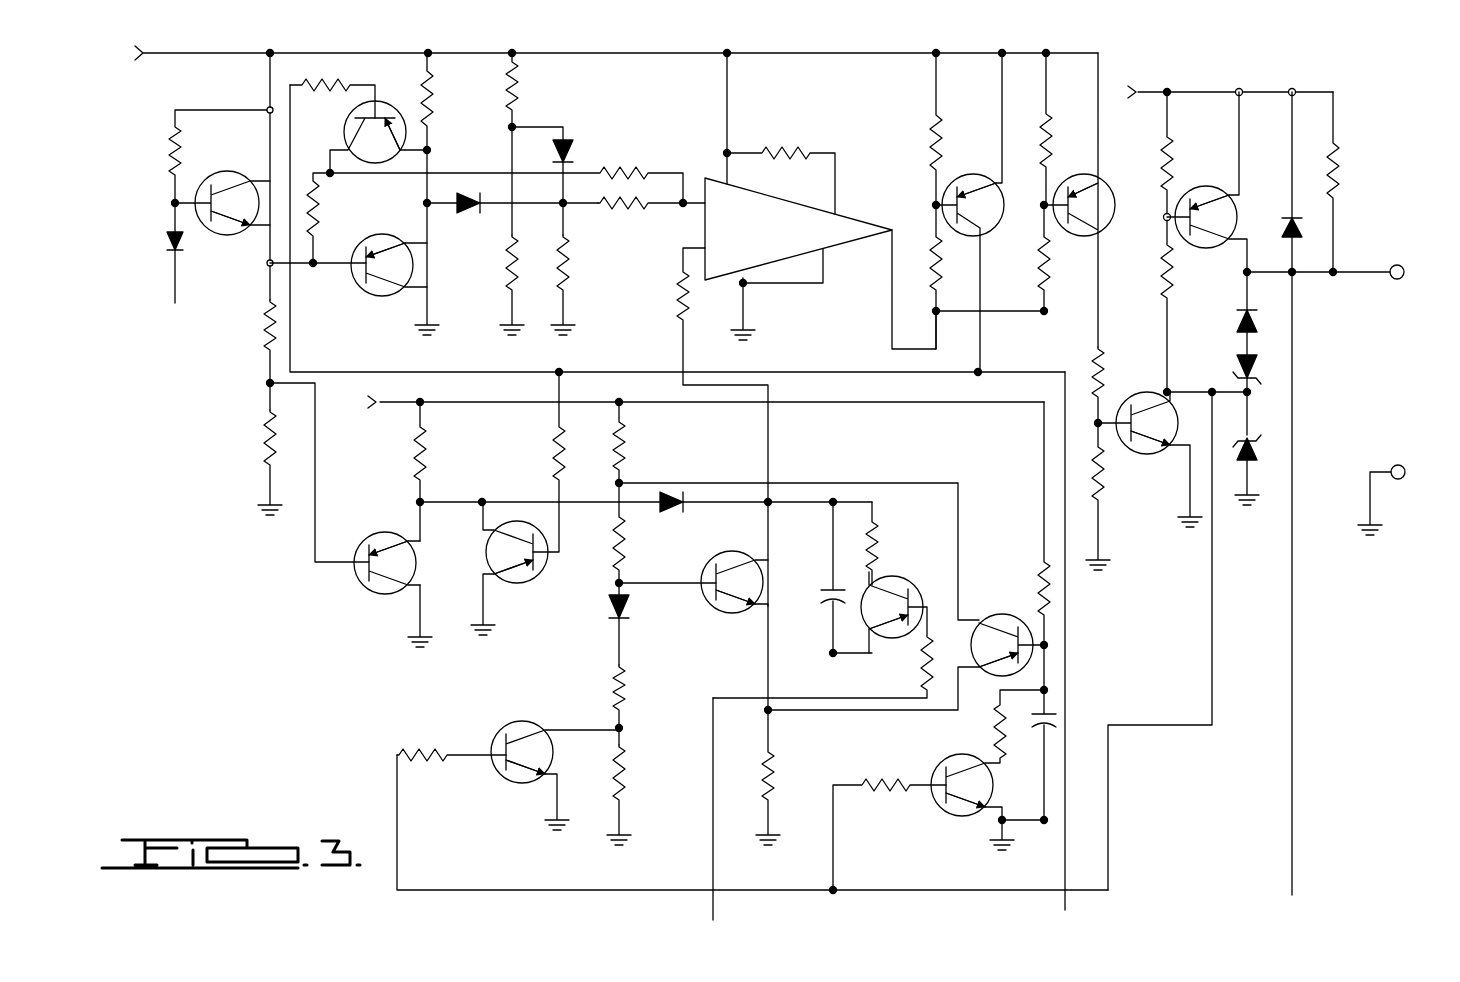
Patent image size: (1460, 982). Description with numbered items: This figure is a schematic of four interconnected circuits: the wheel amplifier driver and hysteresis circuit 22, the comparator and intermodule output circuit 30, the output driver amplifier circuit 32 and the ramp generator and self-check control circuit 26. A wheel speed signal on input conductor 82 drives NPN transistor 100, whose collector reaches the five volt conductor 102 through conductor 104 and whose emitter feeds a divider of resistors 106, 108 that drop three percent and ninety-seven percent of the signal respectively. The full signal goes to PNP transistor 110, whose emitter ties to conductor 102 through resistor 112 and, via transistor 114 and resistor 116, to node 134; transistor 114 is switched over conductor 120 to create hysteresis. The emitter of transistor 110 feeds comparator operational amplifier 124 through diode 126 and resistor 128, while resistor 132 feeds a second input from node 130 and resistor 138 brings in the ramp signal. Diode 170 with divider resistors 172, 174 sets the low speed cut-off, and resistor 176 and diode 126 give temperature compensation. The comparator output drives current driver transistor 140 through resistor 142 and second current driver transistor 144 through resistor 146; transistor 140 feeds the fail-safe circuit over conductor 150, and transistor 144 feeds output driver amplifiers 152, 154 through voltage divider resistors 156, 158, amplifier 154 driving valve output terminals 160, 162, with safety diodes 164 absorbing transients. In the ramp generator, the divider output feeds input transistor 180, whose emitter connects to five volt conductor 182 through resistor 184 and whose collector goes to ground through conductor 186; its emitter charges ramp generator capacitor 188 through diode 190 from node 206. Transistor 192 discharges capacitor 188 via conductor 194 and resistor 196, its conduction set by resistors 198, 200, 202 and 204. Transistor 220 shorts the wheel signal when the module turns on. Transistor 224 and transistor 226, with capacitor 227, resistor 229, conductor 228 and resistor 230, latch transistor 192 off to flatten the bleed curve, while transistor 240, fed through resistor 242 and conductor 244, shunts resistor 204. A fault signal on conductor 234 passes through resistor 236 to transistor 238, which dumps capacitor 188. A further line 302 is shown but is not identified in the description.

The wheel amplifier driver and hysteresis circuit 22 is at (398, 208).
The ramp generator and self-check control circuit 26 is at (698, 670).
The comparator and intermodule output circuit 30 is at (838, 118).
The output driver amplifier circuit 32 is at (1258, 74).
The input conductor 82 is at (168, 277).
The NPN transistor 100 is at (226, 238).
The conductor 102 is at (252, 51).
The conductor 104 is at (267, 75).
The resistor 106 is at (257, 322).
The resistor 108 is at (262, 436).
The PNP transistor 110 is at (377, 300).
The resistor 112 is at (433, 109).
The transistor 114 is at (382, 98).
The resistor 116 is at (312, 183).
The conductor 120 is at (448, 370).
The comparator operational amplifier 124 is at (708, 171).
The diode 126 is at (468, 217).
The resistor 128 is at (630, 226).
The node 130 is at (347, 220).
The resistor 132 is at (640, 146).
The node 134 is at (318, 300).
The resistor 138 is at (682, 303).
The current driver transistor 140 is at (954, 183).
The resistor 142 is at (935, 261).
The second current driver transistor 144 is at (1086, 258).
The resistor 146 is at (1040, 260).
The conductor 150 is at (1068, 672).
The output driver amplifier 152 is at (1155, 458).
The output driver amplifier 154 is at (1217, 250).
The voltage divider resistor 156 is at (1100, 352).
The voltage divider resistor 158 is at (1100, 490).
The valve output terminal 160 is at (1398, 266).
The valve output terminal 162 is at (1398, 464).
The safety diodes 164 is at (1352, 222).
The diode 170 is at (582, 110).
The resistor 172 is at (508, 81).
The resistor 174 is at (514, 255).
The resistor 176 is at (569, 264).
The input transistor 180 is at (360, 592).
The conductor 182 is at (470, 410).
The resistor 184 is at (410, 466).
The conductor 186 is at (415, 618).
The ramp generator capacitor 188 is at (824, 602).
The diode 190 is at (665, 500).
The transistor 192 is at (768, 570).
The conductor 194 is at (800, 500).
The resistor 196 is at (770, 775).
The resistor 198 is at (622, 435).
The resistor 200 is at (625, 548).
The resistor 202 is at (622, 687).
The resistor 204 is at (623, 779).
The node 206 is at (423, 502).
The transistor 220 is at (510, 587).
The transistor 224 is at (1001, 614).
The second transistor 226 is at (952, 812).
The capacitor 227 is at (1052, 712).
The conductor 228 is at (1177, 727).
The resistor 229 is at (1047, 608).
The resistor 230 is at (898, 780).
The conductor 234 is at (715, 906).
The resistor 236 is at (938, 620).
The transistor 238 is at (878, 575).
The transistor 240 is at (513, 784).
The resistor 242 is at (447, 746).
The conductor 244 is at (530, 878).
The conductor 302 is at (1293, 836).